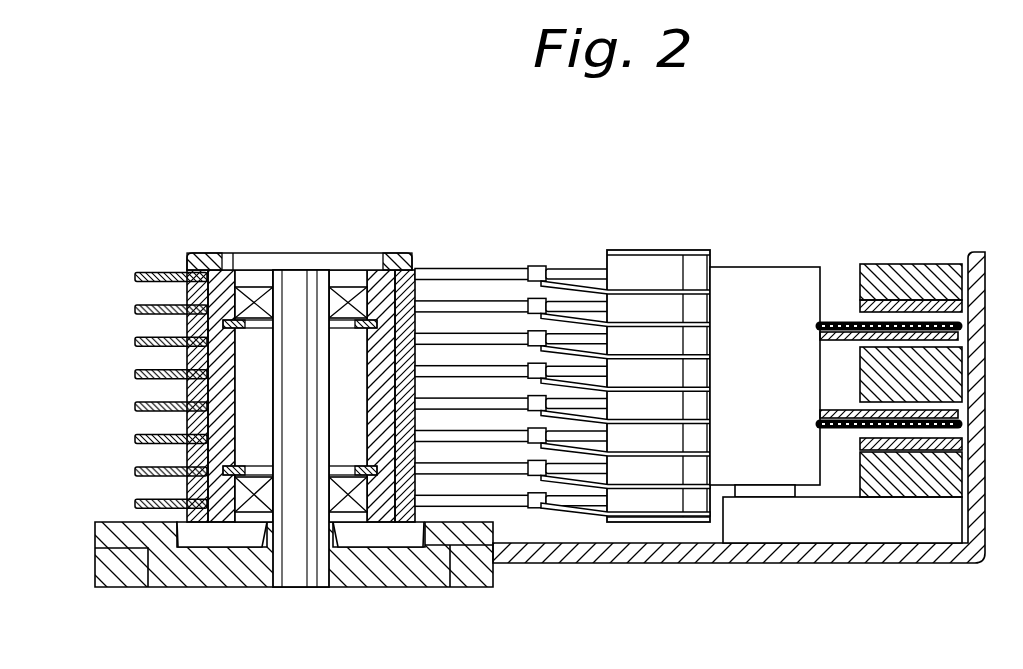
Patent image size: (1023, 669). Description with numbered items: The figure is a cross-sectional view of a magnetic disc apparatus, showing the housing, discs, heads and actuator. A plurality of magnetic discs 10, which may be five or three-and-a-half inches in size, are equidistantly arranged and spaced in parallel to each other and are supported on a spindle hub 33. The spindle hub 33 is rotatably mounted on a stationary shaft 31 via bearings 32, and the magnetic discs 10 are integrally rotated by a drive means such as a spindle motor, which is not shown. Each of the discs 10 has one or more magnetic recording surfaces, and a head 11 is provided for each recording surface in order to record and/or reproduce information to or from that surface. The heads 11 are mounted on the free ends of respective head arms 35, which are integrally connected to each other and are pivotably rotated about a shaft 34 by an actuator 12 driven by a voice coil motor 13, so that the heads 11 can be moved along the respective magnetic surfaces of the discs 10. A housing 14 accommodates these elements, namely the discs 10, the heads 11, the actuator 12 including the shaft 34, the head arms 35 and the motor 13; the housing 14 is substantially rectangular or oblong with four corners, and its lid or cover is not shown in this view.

The magnetic discs 10 is at (447, 270).
The head 11 is at (540, 266).
The actuator 12 is at (820, 272).
The voice coil motor 13 is at (945, 264).
The housing 14 is at (835, 562).
The stationary shaft 31 is at (300, 282).
The bearings 32 is at (254, 288).
The spindle hub 33 is at (231, 254).
The shaft 34 is at (773, 498).
The head arms 35 is at (657, 250).